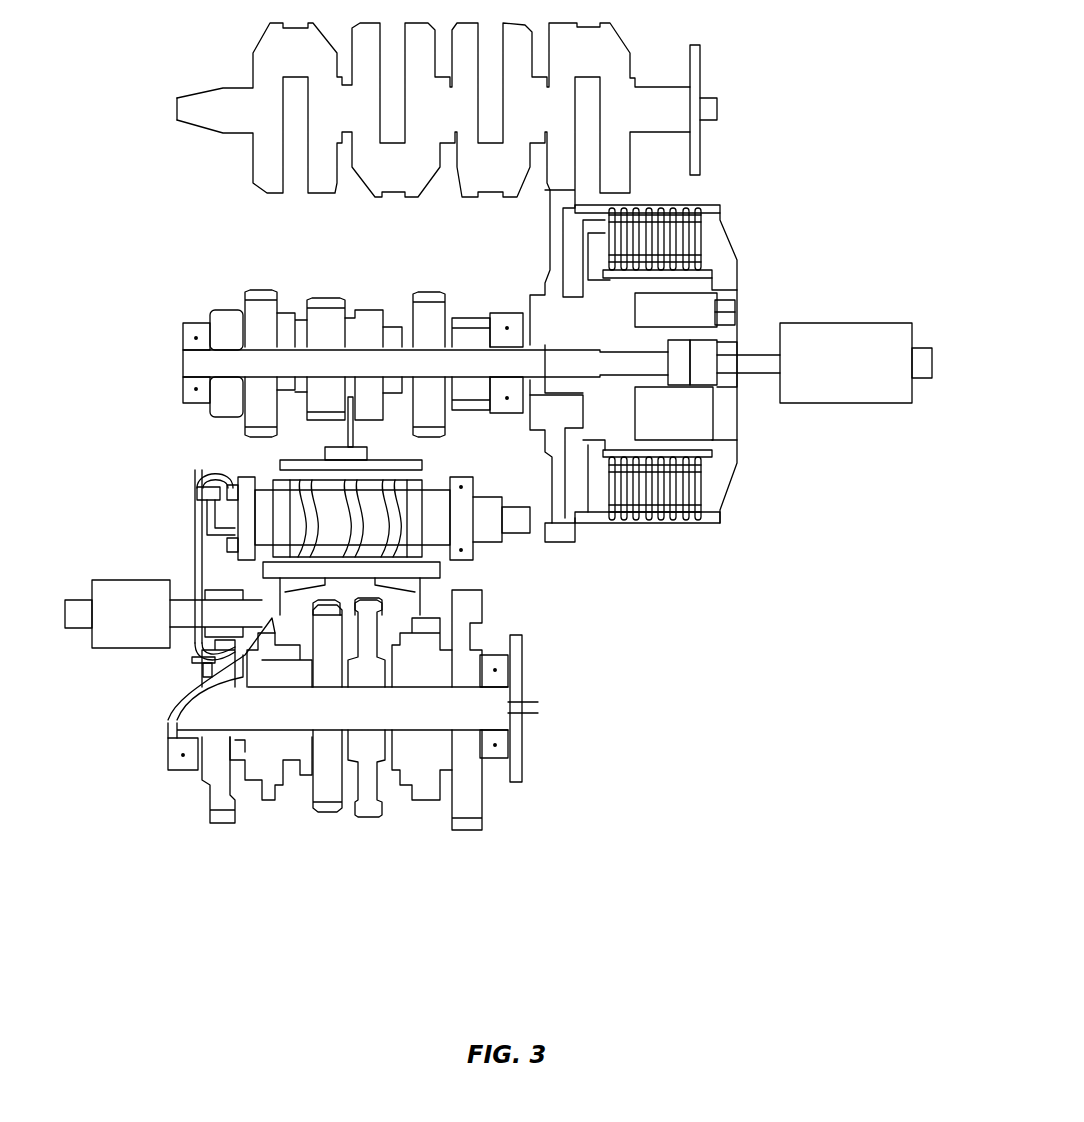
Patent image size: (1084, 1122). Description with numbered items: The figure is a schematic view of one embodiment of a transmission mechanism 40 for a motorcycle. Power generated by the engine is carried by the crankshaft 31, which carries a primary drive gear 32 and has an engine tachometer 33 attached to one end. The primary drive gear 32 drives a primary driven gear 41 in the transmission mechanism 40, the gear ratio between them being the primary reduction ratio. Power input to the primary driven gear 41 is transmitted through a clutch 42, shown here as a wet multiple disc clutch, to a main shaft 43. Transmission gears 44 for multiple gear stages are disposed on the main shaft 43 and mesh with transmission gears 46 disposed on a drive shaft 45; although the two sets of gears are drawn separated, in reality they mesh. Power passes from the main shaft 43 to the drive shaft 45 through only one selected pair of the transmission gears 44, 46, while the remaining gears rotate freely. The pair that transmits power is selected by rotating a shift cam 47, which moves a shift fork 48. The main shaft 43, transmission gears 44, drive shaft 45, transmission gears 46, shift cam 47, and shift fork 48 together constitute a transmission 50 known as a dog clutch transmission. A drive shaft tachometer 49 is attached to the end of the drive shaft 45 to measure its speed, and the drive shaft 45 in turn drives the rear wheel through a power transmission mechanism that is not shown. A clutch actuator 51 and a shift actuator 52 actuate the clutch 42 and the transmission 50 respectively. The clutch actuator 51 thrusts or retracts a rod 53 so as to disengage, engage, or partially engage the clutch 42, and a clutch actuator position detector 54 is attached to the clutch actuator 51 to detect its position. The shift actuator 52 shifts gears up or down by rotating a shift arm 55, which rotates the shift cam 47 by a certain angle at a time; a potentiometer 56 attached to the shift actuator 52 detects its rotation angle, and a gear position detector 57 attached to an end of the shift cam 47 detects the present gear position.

The crankshaft 31 is at (712, 107).
The primary drive gear 32 is at (553, 170).
The engine tachometer 33 is at (700, 75).
The transmission mechanism 40 is at (543, 878).
The primary driven gear 41 is at (565, 545).
The clutch 42 is at (725, 240).
The main shaft 43 is at (185, 357).
The transmission gears 44 is at (262, 270).
The drive shaft 45 is at (535, 707).
The transmission gears 46 is at (380, 835).
The shift cam 47 is at (423, 483).
The shift fork 48 is at (345, 432).
The drive shaft tachometer 49 is at (523, 752).
The transmission 50 is at (115, 405).
The clutch actuator 51 is at (843, 325).
The shift actuator 52 is at (133, 648).
The rod 53 is at (758, 362).
The clutch actuator position detector 54 is at (923, 348).
The shift arm 55 is at (198, 572).
The potentiometer 56 is at (72, 628).
The gear position detector 57 is at (515, 530).